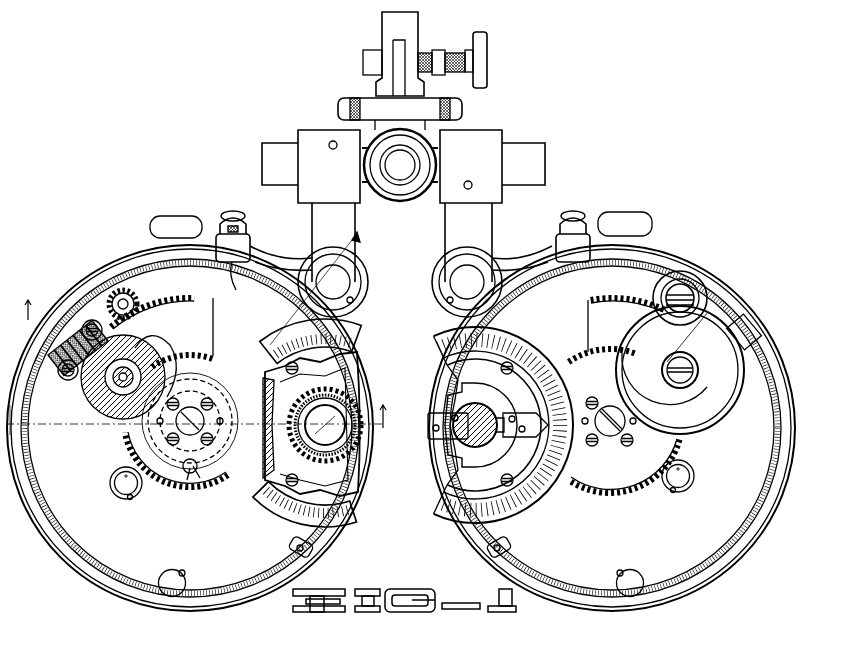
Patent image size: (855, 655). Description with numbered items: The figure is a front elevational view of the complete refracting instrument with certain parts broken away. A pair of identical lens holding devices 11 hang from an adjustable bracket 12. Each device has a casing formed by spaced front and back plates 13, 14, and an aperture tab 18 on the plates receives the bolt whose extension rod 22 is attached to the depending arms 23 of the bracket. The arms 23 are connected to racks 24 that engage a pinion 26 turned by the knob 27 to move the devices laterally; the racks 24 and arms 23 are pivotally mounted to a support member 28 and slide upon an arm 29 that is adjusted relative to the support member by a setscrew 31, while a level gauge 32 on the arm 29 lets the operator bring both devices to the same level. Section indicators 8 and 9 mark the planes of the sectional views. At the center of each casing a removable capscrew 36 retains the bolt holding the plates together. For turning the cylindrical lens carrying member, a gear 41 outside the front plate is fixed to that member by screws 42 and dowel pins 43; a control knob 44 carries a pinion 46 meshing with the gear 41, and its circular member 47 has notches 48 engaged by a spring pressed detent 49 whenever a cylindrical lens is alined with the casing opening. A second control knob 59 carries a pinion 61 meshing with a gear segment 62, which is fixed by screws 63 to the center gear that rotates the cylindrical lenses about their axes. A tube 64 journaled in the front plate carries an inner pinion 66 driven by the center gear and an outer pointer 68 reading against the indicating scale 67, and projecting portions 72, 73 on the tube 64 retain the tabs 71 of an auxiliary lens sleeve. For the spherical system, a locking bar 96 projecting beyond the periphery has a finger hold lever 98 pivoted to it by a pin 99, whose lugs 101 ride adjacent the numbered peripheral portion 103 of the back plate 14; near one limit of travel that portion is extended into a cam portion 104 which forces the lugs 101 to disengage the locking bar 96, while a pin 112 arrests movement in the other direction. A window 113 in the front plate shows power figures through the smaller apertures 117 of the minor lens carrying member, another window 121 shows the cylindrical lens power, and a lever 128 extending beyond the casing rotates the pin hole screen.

The section line 8- 8 is at (200, 373).
The section line 9- 9 is at (190, 340).
The lens holding devices 11 is at (88, 552).
The adjustable bracket 12 is at (504, 96).
The front plate 13 is at (52, 510).
The back plate 14 is at (62, 545).
The aperture tab 18 is at (440, 300).
The extension rod 22 is at (458, 283).
The depending arms 23 is at (312, 218).
The racks 24 is at (441, 143).
The pinion 26 is at (418, 182).
The knob 27 is at (400, 200).
The support member 28 is at (410, 19).
The arm 29 is at (380, 99).
The setscrew 31 is at (480, 36).
The level gauge 32 is at (343, 107).
The removable capscrew 36 is at (196, 412).
The gear 41 is at (138, 450).
The screws 42 is at (174, 450).
The dowel pins 43 is at (162, 424).
The control knob 44 is at (732, 398).
The pinion 46 is at (105, 392).
The circular member 47 is at (110, 425).
The notches 48 is at (165, 352).
The spring pressed detent 49 is at (86, 372).
The control knob 59 is at (137, 300).
The pinion 61 is at (128, 293).
The gear segment 62 is at (210, 300).
The screws 63 is at (196, 474).
The tube 64 is at (345, 436).
The pinion 66 is at (345, 400).
The axis scale 67 is at (353, 340).
The pointer 68 is at (526, 412).
The tabs 71 is at (470, 462).
The projecting portion 72 is at (460, 444).
The projecting portion 73 is at (500, 436).
The locking bar 96 is at (240, 268).
The finger hold portion 98 is at (237, 222).
The pin 99 is at (226, 230).
The lugs 101 is at (248, 240).
The peripheral portion 103 is at (95, 272).
The cam portion 104 is at (290, 260).
The pin 112 is at (306, 556).
The window 113 is at (131, 500).
The smaller apertures 117 is at (110, 485).
The window 121 is at (185, 576).
The lever 128 is at (150, 225).